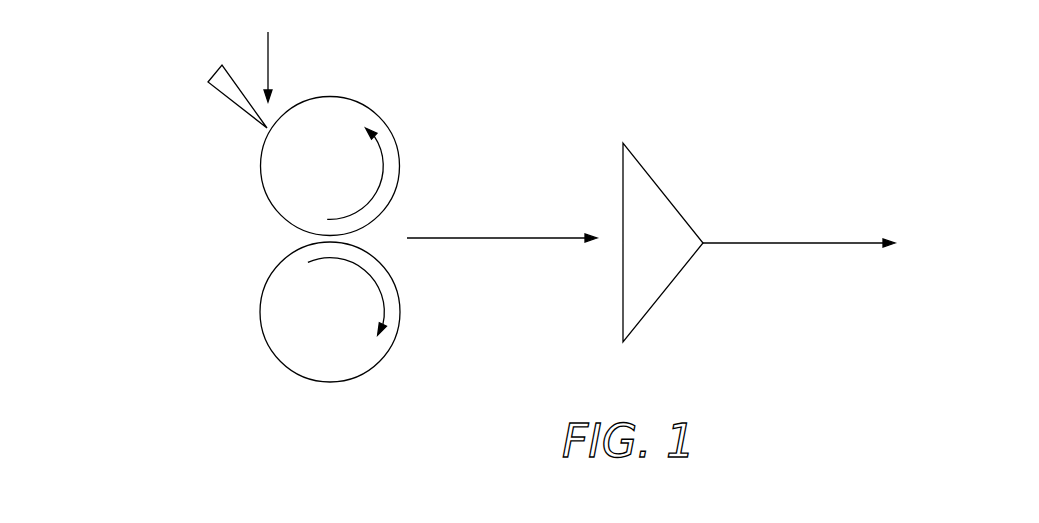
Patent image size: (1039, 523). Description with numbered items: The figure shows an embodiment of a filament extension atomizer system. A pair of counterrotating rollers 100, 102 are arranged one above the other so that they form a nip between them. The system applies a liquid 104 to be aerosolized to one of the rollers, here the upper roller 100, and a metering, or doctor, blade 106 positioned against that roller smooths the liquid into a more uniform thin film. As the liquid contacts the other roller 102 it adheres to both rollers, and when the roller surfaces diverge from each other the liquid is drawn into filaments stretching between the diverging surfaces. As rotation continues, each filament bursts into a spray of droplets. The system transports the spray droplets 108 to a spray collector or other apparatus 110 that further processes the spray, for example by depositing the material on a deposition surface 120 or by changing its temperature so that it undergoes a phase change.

The first roller 100 is at (270, 200).
The second roller 102 is at (288, 366).
The feed material / feedstock input 104 is at (271, 53).
The nozzle / blade 106 is at (230, 105).
The output beam / stream 108 is at (452, 237).
The prism / dispersing element 110 is at (663, 192).
The deposition surface 120 is at (940, 215).